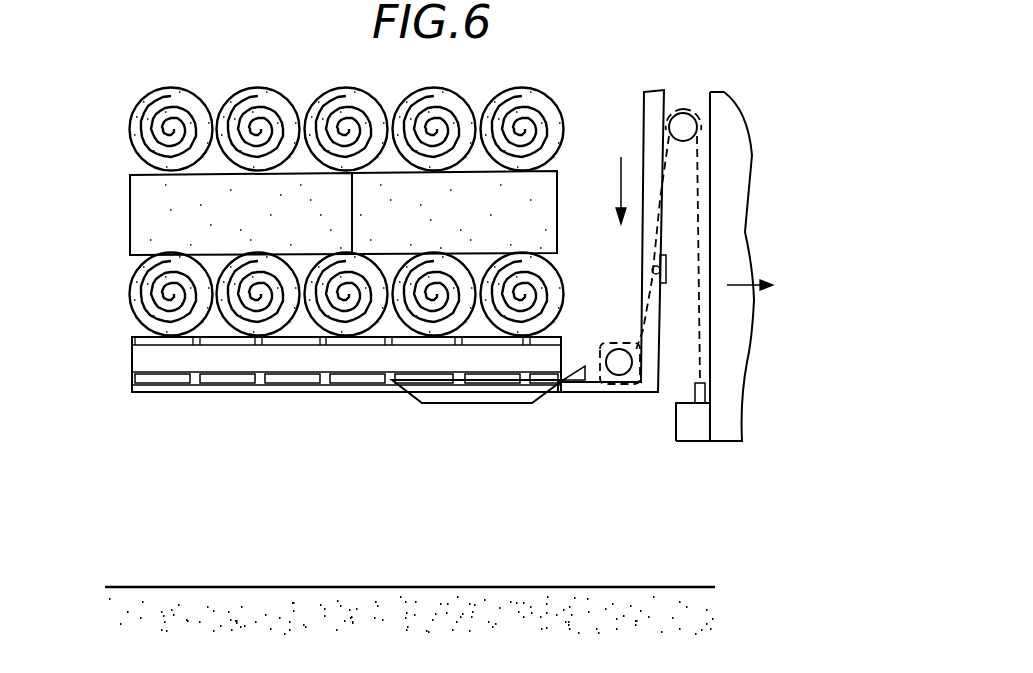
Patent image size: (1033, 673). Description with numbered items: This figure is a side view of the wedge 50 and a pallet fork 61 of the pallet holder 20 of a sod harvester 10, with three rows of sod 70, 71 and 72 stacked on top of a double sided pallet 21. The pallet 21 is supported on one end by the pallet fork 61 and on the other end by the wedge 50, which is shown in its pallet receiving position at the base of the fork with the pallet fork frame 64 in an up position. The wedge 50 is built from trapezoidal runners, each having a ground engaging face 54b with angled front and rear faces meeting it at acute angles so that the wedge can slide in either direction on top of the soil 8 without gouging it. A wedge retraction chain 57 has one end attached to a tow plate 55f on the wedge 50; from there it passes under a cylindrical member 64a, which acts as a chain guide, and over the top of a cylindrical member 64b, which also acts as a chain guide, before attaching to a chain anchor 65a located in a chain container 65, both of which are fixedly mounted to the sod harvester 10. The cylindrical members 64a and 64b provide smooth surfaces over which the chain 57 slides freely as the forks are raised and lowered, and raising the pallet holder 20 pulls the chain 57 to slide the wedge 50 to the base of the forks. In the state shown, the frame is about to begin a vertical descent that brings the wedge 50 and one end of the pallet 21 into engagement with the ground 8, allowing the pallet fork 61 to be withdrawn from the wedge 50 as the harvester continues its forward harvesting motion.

The soil 8 is at (230, 587).
The sod harvester 10 is at (735, 402).
The pallet holder 20 is at (641, 272).
The double sided pallet 21 is at (320, 391).
The wedge 50 is at (454, 428).
The ground engaging face 54b is at (414, 392).
The tow plate 55f is at (572, 378).
The wedge retraction chain 57 is at (703, 235).
The pallet fork 61 is at (241, 392).
The pallet fork frame 64 is at (650, 148).
The cylindrical member 64a is at (615, 372).
The cylindrical member 64b is at (683, 120).
The chain container 65 is at (690, 432).
The chain anchor 65a is at (705, 390).
The row of sod 70 is at (152, 292).
The row of sod 71 is at (155, 217).
The row of sod 72 is at (152, 132).